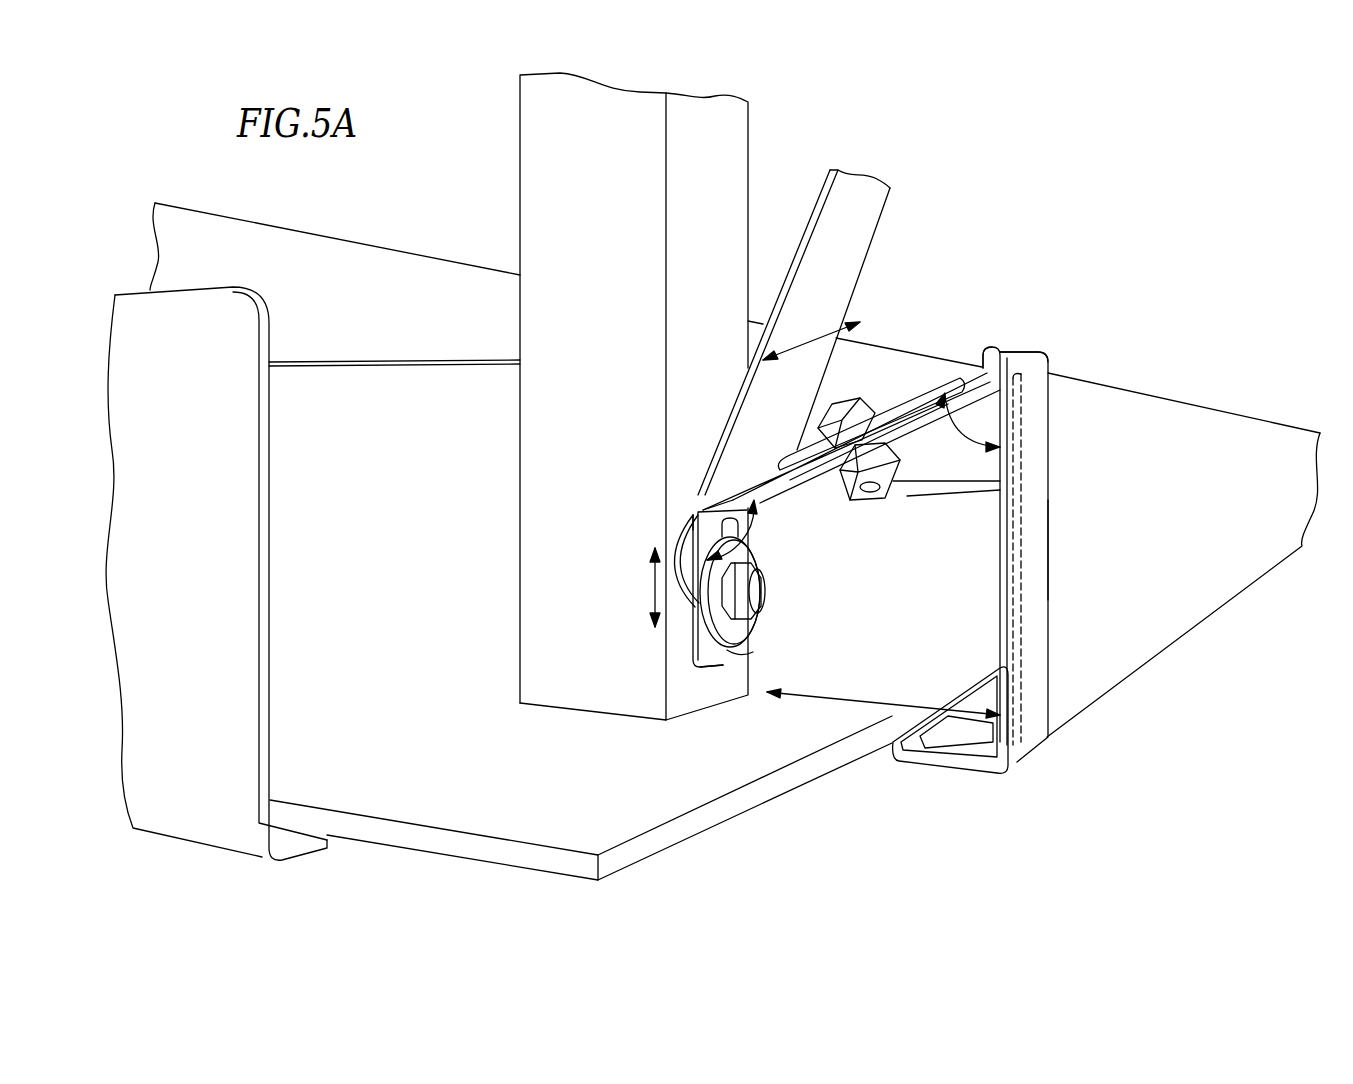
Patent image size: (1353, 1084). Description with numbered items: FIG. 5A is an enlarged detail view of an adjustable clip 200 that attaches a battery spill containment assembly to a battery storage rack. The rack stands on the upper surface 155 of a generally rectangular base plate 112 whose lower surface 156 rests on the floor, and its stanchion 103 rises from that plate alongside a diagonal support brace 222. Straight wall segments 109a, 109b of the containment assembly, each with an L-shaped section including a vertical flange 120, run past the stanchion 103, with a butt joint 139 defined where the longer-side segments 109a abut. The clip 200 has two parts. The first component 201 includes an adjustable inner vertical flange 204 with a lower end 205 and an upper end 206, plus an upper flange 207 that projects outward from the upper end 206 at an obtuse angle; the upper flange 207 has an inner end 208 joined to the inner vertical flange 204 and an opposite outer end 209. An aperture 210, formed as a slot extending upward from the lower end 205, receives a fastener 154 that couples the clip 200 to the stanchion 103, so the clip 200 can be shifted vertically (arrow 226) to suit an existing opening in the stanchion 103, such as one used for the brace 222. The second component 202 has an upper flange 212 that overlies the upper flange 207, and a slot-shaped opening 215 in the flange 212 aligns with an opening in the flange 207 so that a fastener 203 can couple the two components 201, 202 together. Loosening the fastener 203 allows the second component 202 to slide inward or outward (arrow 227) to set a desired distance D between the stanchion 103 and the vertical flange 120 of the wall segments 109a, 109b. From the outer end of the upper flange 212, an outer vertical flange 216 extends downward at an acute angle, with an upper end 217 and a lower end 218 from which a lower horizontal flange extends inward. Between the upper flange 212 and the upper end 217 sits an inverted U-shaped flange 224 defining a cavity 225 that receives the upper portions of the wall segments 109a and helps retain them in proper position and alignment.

The stanchion 103 is at (715, 117).
The straight wall segment 109a is at (1197, 575).
The straight wall segment 109b is at (228, 812).
The base plate 112 is at (478, 778).
The vertical flange 120 is at (1053, 713).
The butt joint 139 is at (1013, 620).
The fastener 154 is at (753, 600).
The upper surface 155 is at (400, 773).
The lower surface 156 is at (435, 853).
The adjustable clip 200 is at (1040, 288).
The first component 201 is at (733, 470).
The second component 202 is at (1035, 487).
The fastener 203 is at (833, 422).
The inner vertical flange 204 is at (700, 683).
The lower end 205 is at (703, 668).
The upper end 206 is at (697, 513).
The upper flange 207 is at (760, 498).
The inner end 208 is at (733, 503).
The outer end 209 is at (913, 480).
The aperture 210 is at (827, 503).
The upper flange 212 is at (925, 398).
The opening 215 is at (930, 395).
The outer vertical flange 216 is at (1033, 548).
The upper end 217 is at (1033, 357).
The lower end 218 is at (1020, 757).
The diagonal support brace 222 is at (850, 197).
The inverted U-shaped flange 224 is at (993, 347).
The cavity 225 is at (1023, 370).
The arrow 226 is at (650, 587).
The arrow 227 is at (815, 330).
The distance D is at (893, 700).